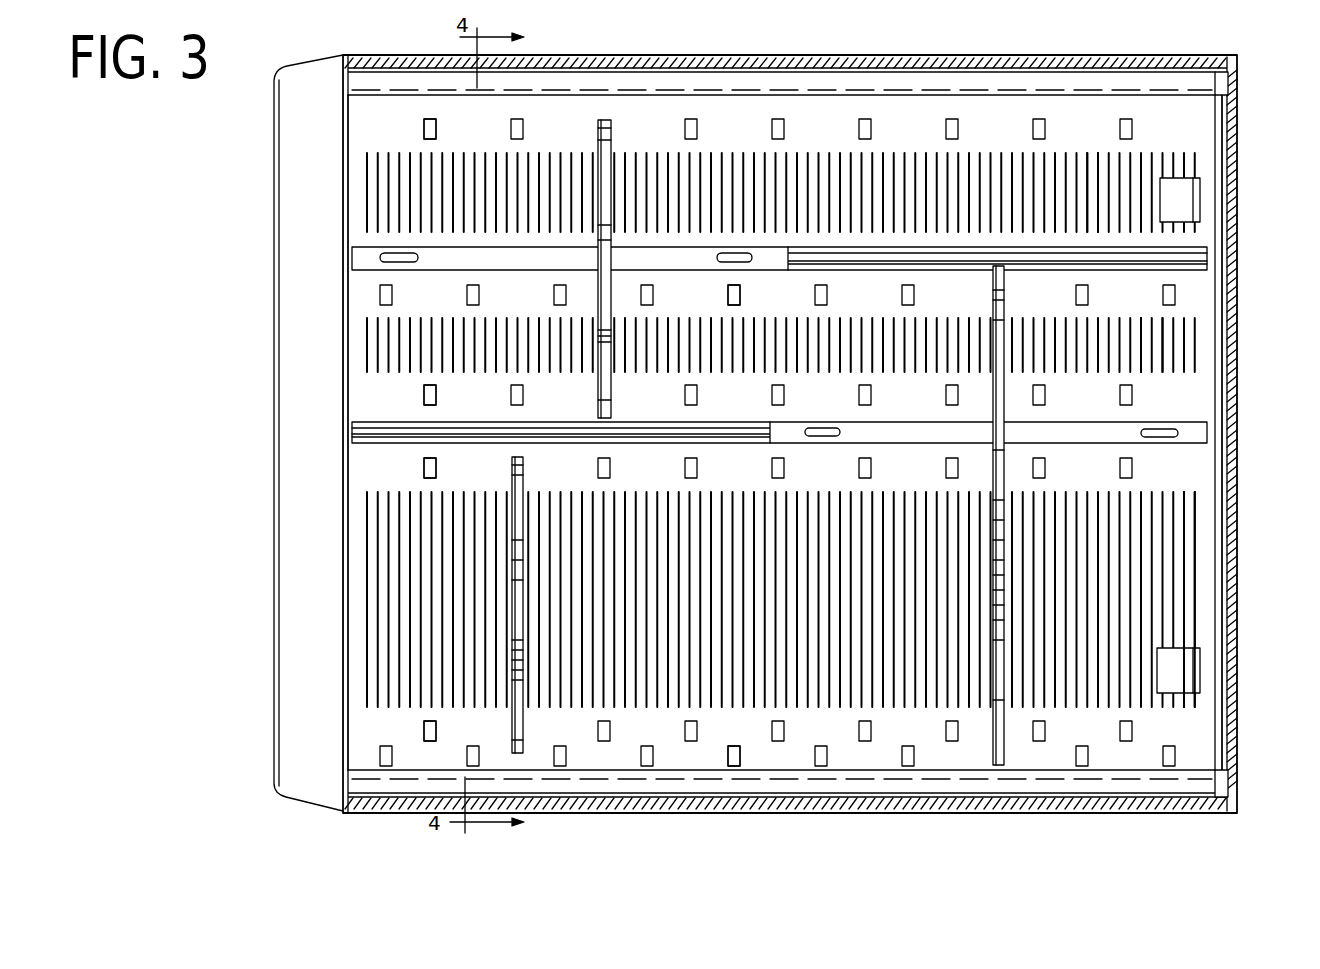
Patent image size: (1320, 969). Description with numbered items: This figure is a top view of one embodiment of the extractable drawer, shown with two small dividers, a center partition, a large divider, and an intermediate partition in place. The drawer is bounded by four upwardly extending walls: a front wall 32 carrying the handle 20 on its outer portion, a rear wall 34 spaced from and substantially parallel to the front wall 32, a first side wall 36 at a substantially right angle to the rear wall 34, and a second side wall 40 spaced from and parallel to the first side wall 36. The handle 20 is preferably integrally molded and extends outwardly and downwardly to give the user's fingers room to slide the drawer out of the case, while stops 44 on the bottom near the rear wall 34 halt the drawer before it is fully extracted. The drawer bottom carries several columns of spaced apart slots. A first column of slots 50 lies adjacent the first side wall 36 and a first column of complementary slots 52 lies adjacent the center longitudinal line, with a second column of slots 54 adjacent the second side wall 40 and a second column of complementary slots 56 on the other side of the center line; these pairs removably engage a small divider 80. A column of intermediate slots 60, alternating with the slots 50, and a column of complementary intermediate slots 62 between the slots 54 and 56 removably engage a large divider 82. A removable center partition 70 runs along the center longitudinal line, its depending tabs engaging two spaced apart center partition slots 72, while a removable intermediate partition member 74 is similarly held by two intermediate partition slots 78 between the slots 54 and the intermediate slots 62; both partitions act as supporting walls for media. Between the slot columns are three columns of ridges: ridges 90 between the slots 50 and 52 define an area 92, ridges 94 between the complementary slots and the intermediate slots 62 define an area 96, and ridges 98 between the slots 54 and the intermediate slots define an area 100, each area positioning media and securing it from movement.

The handle 20 is at (272, 251).
The front wall 32 is at (350, 625).
The rear wall 34 is at (1208, 366).
The first side wall 36 is at (1195, 772).
The second side wall 40 is at (1192, 86).
The stops 44 is at (1180, 198).
The first column of spaced apart slots 50 is at (424, 733).
The first column of complementary spaced apart slots 52 is at (424, 463).
The second column of spaced apart slots 54 is at (427, 129).
The second column of complementary spaced apart slots 56 is at (427, 394).
The column of spaced apart intermediate slots 60 is at (728, 756).
The column of complementary spaced apart intermediate slots 62 is at (728, 295).
The center partition 70 is at (779, 455).
The center partition slot 72 is at (817, 437).
The intermediate partition member 74 is at (779, 273).
The intermediate partition slot 78 is at (745, 258).
The small divider 80 is at (523, 476).
The large divider 82 is at (1005, 290).
The ridges 90 is at (1190, 513).
The area 92 is at (1183, 496).
The ridges 94 is at (1160, 362).
The area 96 is at (1142, 366).
The ridges 98 is at (1096, 160).
The area 100 is at (1087, 155).